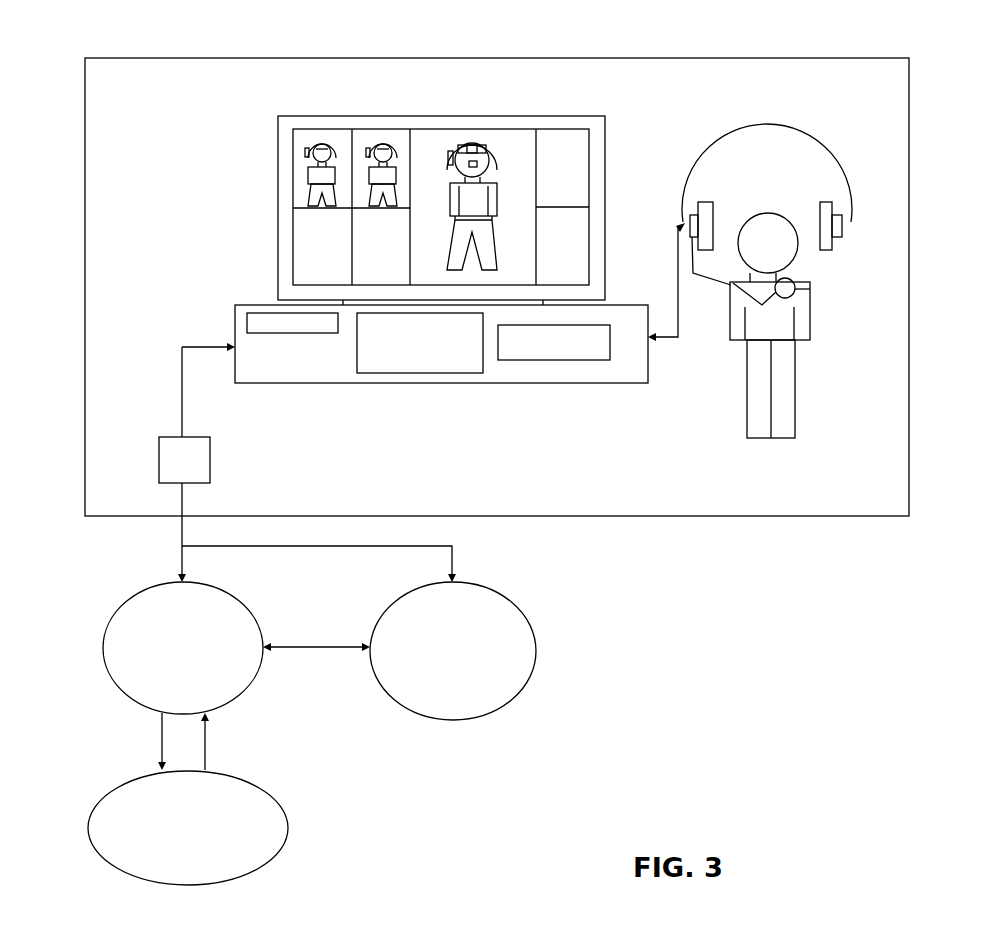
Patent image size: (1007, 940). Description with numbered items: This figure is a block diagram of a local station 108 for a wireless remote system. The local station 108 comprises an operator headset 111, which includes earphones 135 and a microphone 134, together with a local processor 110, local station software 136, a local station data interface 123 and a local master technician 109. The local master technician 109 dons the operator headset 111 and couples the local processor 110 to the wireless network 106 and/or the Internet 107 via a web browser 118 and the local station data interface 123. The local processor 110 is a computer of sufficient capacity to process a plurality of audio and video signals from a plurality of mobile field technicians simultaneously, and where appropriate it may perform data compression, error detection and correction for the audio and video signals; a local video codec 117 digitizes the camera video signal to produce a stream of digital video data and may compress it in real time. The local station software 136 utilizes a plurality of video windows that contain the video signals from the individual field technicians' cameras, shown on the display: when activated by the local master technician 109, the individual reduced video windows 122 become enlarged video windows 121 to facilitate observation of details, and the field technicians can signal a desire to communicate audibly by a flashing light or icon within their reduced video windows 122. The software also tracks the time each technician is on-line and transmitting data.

The local station 108 is at (269, 52).
The enlarged video windows 121 is at (453, 128).
The reduced video windows 122 is at (293, 180).
The operator headset 111 is at (778, 122).
The earphones 135 is at (818, 213).
The microphone 134 is at (812, 290).
The local master technician 109 is at (796, 370).
The local processor 110 is at (276, 384).
The local station software 136 is at (258, 312).
The web browser 118 is at (410, 374).
The local video codec 117 is at (545, 361).
The local station data interface 123 is at (210, 460).
The wireless network 106 is at (103, 648).
The Internet 107 is at (537, 651).